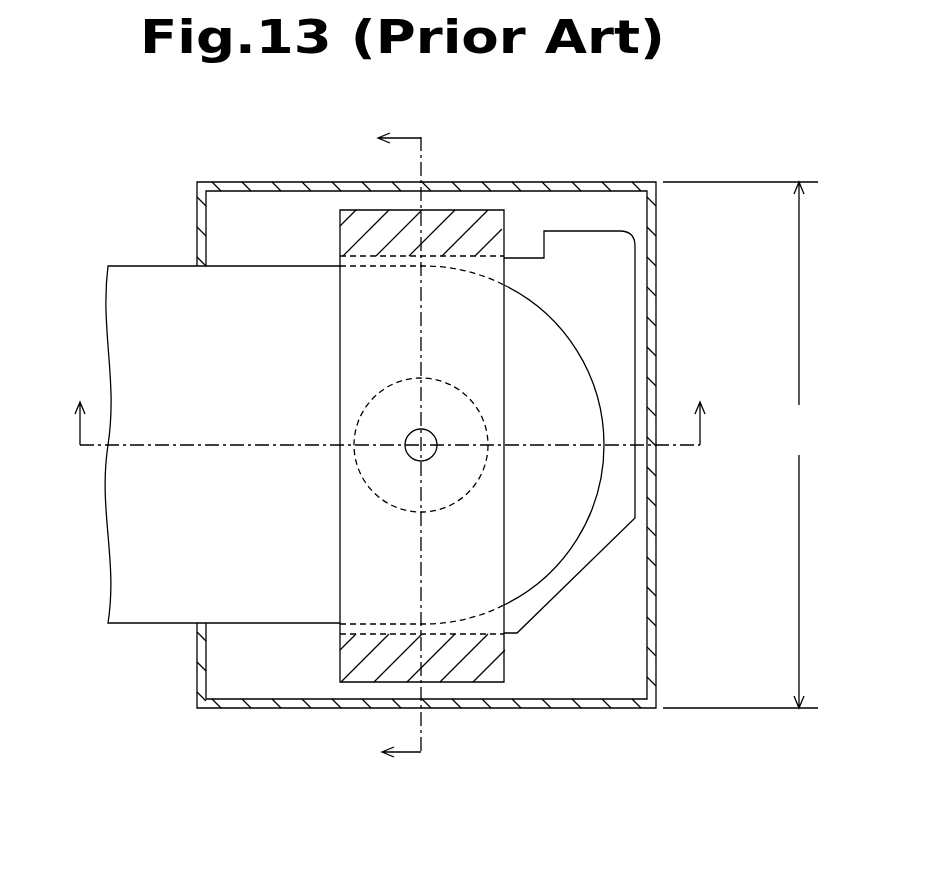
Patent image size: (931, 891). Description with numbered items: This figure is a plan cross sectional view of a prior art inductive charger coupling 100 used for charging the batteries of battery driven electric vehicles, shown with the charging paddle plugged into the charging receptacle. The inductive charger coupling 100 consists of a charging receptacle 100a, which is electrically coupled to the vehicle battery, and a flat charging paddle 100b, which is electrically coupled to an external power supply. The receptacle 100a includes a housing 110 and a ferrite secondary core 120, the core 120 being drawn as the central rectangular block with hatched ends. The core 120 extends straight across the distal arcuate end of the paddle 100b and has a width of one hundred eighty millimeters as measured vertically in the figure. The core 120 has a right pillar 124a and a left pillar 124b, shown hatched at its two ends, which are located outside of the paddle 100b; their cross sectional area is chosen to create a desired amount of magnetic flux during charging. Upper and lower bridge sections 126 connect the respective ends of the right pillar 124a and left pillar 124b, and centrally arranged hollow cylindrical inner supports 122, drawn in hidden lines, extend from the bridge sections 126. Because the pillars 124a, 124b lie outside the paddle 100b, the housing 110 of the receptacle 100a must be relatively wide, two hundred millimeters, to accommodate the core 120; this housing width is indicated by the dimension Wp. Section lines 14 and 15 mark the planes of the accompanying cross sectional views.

The inductive charger coupling 100 is at (484, 164).
The charging receptacle 100a is at (226, 181).
The charging paddle 100b is at (149, 254).
The housing 110 is at (200, 650).
The ferrite secondary core 120 is at (326, 650).
The inner support 122 is at (390, 415).
The right pillar 124a is at (383, 235).
The left pillar 124b is at (473, 682).
The bridge section 126 is at (350, 300).
The section line 14- 14 is at (390, 427).
The section line 15- 15 is at (405, 445).
The width dimension Wp is at (744, 445).